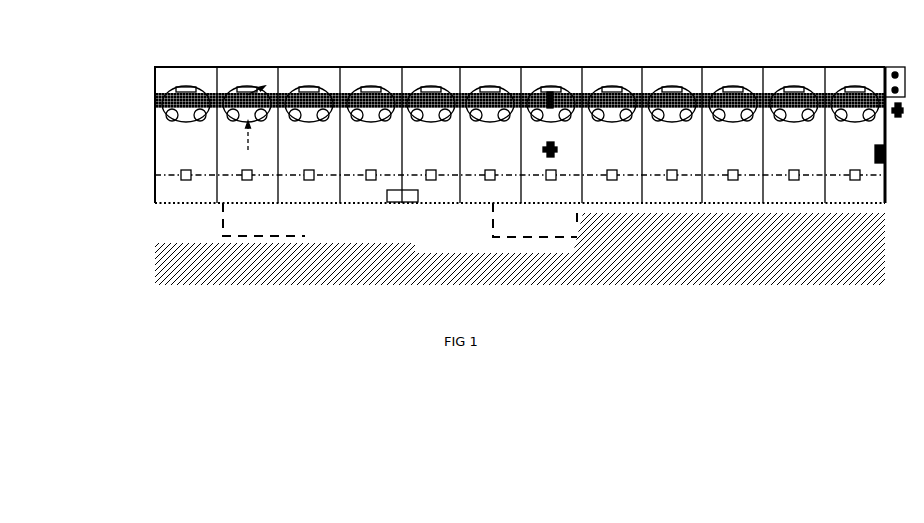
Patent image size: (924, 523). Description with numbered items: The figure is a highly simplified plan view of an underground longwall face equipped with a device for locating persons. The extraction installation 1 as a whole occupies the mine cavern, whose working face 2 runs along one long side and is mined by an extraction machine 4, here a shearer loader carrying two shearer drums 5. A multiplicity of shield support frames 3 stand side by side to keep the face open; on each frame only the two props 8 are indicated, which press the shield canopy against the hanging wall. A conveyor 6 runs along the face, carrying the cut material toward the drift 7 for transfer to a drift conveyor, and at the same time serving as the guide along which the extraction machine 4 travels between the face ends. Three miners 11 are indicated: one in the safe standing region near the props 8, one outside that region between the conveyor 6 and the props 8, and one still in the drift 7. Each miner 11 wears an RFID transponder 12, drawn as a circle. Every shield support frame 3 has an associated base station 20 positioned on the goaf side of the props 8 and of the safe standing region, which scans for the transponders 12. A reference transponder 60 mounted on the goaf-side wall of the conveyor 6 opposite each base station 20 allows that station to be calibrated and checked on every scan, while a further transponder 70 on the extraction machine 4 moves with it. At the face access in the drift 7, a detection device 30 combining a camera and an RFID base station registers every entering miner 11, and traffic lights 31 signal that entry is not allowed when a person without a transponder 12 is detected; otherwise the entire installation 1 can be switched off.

The extraction installation 1 is at (303, 30).
The working face 2 is at (669, 278).
The shield support frame 3 is at (186, 62).
The extraction machine 4 is at (362, 193).
The shearer drums 5 is at (305, 212).
The conveyor 6 is at (687, 188).
The drift 7 is at (912, 228).
The props 8 is at (193, 122).
The miner 11 is at (558, 95).
The RFID transponder 12 is at (545, 94).
The base station 20 is at (310, 85).
The detection device 30 is at (886, 160).
The traffic lights 31 is at (893, 66).
The reference transponder 60 is at (427, 170).
The further transponder 70 is at (412, 204).